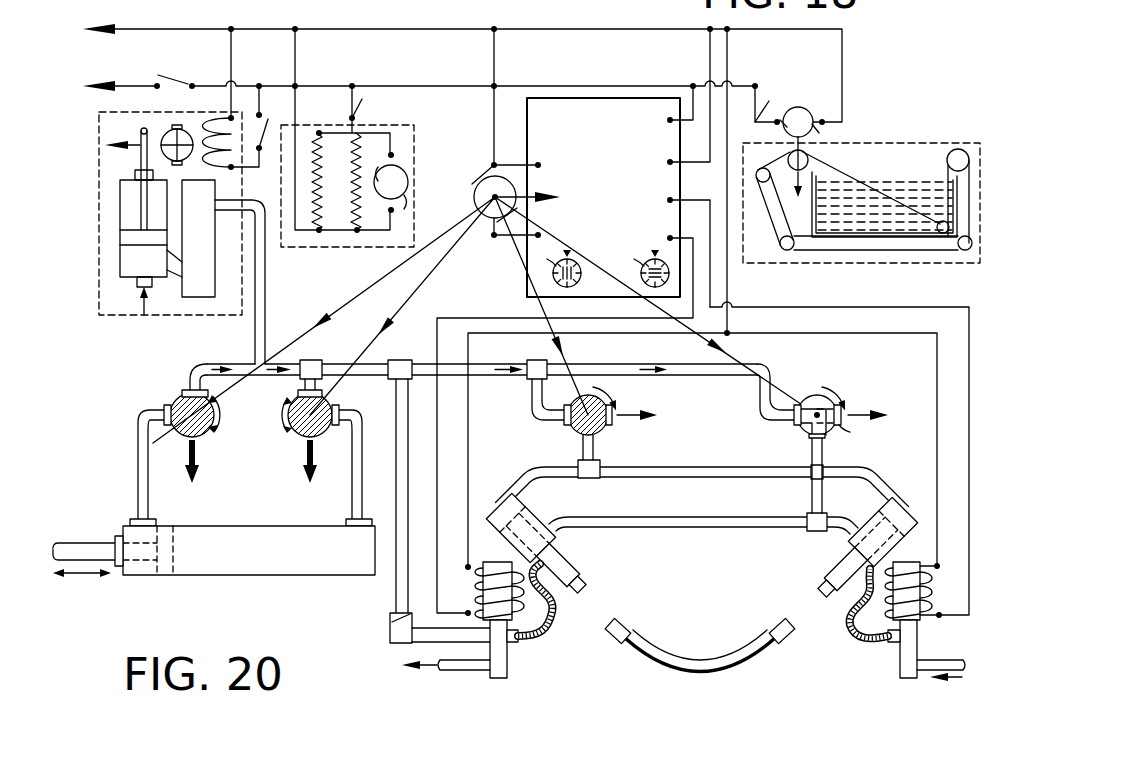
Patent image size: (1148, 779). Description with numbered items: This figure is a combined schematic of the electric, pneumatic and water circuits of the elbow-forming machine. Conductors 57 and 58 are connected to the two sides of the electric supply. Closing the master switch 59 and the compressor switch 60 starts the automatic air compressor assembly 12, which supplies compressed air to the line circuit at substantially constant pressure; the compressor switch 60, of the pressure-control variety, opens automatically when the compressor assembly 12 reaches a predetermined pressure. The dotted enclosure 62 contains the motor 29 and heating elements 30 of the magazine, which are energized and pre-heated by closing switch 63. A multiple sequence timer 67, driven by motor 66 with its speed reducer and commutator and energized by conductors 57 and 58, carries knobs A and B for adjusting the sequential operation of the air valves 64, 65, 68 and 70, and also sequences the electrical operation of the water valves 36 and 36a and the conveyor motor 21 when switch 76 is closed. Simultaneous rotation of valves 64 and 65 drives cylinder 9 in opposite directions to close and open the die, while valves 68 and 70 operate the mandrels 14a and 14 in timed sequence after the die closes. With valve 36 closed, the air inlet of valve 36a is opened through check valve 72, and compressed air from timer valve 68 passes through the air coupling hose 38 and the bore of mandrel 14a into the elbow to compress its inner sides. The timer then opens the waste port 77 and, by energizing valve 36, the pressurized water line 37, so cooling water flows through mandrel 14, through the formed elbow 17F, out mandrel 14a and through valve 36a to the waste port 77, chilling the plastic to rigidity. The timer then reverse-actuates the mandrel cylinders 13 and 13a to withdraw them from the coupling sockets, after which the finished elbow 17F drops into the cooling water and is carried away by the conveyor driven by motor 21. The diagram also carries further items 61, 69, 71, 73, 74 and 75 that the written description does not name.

The conductor 57 is at (172, 29).
The conductor 58 is at (122, 83).
The master switch 59 is at (178, 76).
The compressor switch 60 is at (281, 108).
The air compressor assembly 12 is at (97, 205).
The dotted enclosure 62 is at (404, 122).
The switch 63 is at (349, 112).
The heating elements 30 is at (352, 197).
The motor 29 is at (409, 181).
The motor 66 is at (473, 200).
The multiple sequence timer 67 is at (595, 88).
The switch 76 is at (764, 112).
The pump assembly 75 is at (895, 136).
The electric motor 21 is at (815, 128).
The conductor 73 is at (846, 307).
The air line 61 is at (255, 334).
The valve 64 is at (173, 397).
The valve 65 is at (328, 435).
The cylinder 9 is at (251, 576).
The air line 74 is at (408, 465).
The check valve 72 is at (390, 634).
The waste port 77 is at (466, 672).
The air coupling hose 38 is at (540, 639).
The valve 36a is at (486, 562).
The cylinder 13a is at (537, 520).
The mandrel 14a is at (567, 565).
The finished elbow 17F is at (702, 674).
The timer valve 68 is at (608, 428).
The air line 69 is at (690, 467).
The air valve 70 is at (803, 428).
The air line 71 is at (812, 493).
The cylinder 13 is at (897, 505).
The mandrel 14 is at (827, 563).
The valve 36 is at (922, 598).
The pressurized water line 37 is at (938, 660).